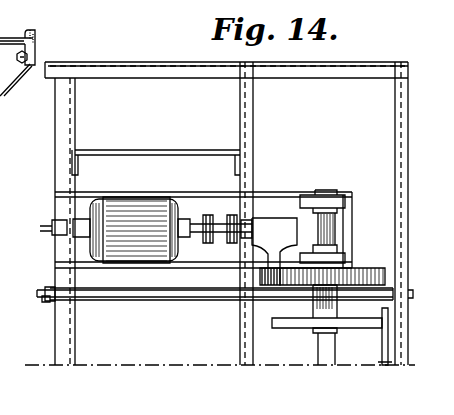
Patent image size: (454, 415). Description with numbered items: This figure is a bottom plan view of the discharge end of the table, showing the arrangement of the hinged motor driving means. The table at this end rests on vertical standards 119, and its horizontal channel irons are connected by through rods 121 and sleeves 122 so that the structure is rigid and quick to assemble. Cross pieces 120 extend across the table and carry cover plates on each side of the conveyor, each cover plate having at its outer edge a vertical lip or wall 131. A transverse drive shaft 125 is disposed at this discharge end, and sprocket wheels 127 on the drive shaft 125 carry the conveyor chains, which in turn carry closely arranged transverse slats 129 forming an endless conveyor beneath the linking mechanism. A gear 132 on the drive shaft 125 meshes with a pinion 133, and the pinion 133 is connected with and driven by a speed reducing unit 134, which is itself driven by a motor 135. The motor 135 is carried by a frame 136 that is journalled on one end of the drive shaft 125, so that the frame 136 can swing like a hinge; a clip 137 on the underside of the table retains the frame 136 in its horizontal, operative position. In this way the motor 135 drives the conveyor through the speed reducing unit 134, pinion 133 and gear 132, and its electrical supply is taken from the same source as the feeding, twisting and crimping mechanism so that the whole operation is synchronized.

The vertical standards 119 is at (180, 155).
The cross pieces 120 is at (60, 347).
The through rods 121 is at (38, 292).
The sleeves 122 is at (46, 302).
The drive shaft 125 is at (318, 350).
The sprocket wheels 127 is at (361, 322).
The slats 129 is at (383, 362).
The vertical lip or wall 131 is at (30, 30).
The gear 132 is at (369, 274).
The pinion 133 is at (262, 281).
The speed reducing unit 134 is at (265, 228).
The motor 135 is at (162, 230).
The frame 136 is at (288, 202).
The clip 137 is at (52, 228).